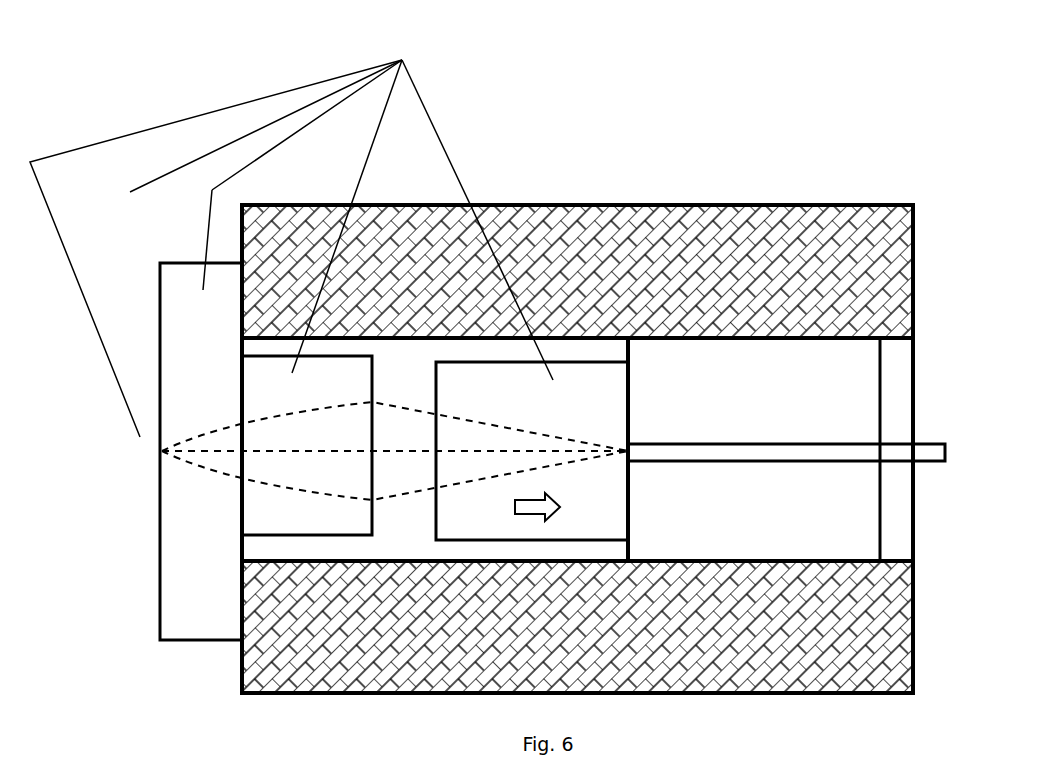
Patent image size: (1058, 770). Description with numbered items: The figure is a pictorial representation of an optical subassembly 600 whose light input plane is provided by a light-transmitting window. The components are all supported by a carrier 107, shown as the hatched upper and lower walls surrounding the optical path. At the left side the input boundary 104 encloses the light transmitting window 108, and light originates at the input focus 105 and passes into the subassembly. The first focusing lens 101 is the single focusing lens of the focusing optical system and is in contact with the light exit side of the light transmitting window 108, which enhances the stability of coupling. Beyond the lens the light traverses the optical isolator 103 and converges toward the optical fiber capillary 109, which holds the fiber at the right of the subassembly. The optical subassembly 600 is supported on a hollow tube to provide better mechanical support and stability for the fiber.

The optical subassembly 600 is at (291, 230).
The first focusing lens 101 is at (307, 445).
The optical isolator 103 is at (532, 451).
The input boundary 104 is at (158, 261).
The input focus 105 is at (372, 451).
The carrier 107 is at (740, 240).
The light transmitting window 108 is at (205, 255).
The optical fiber capillary 109 is at (786, 449).